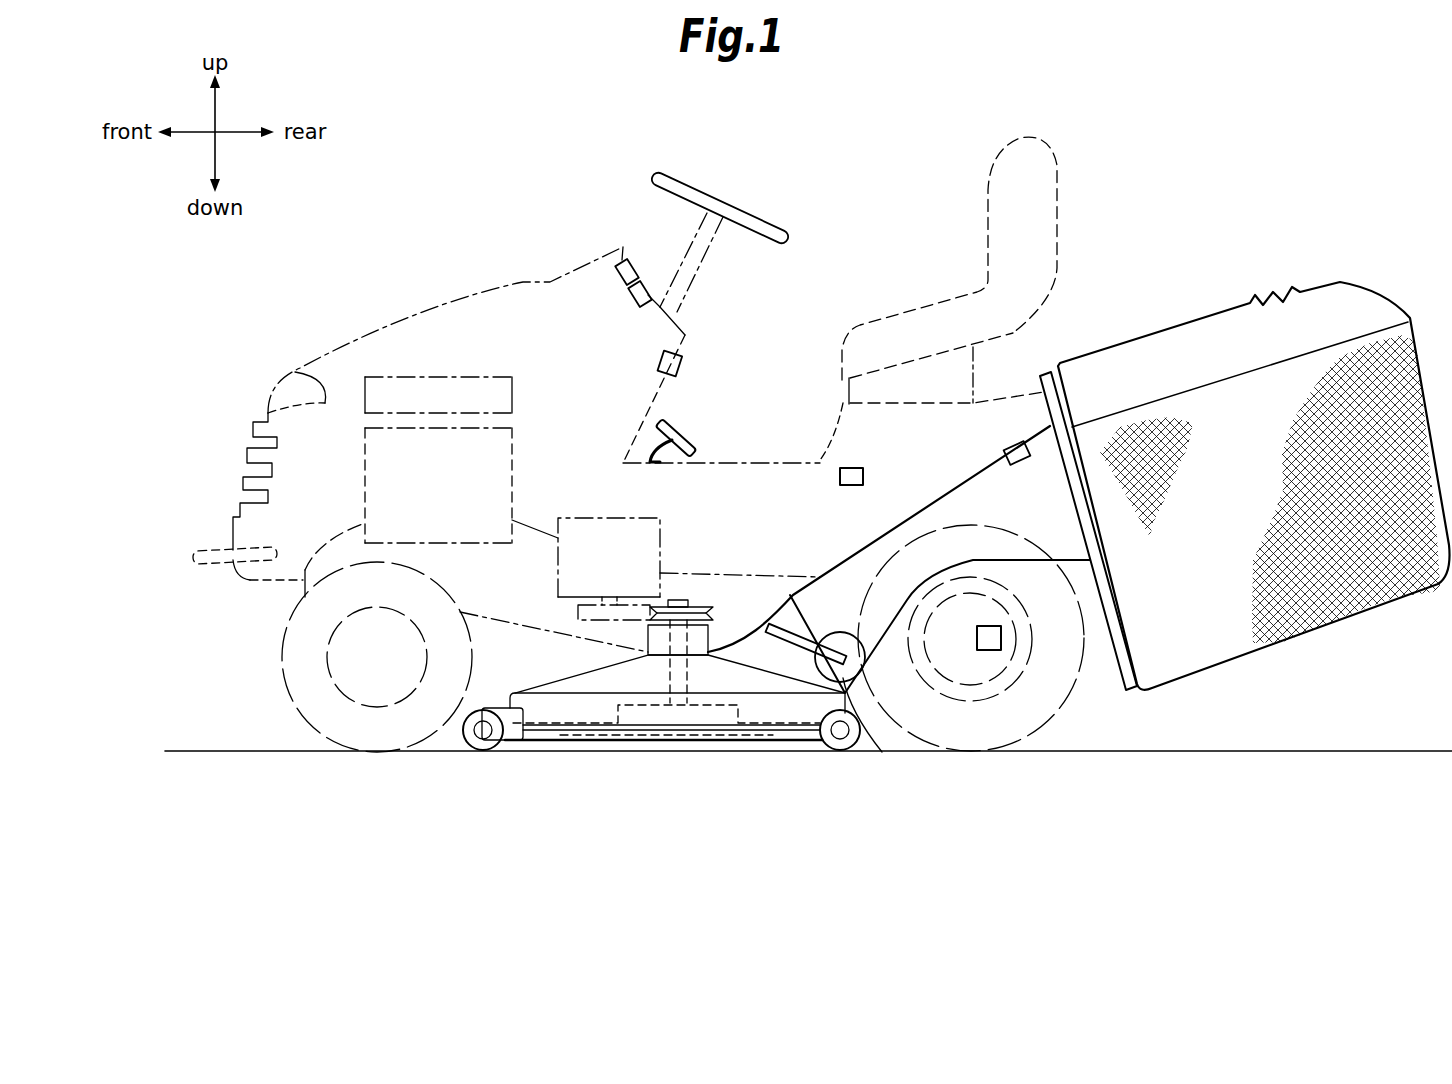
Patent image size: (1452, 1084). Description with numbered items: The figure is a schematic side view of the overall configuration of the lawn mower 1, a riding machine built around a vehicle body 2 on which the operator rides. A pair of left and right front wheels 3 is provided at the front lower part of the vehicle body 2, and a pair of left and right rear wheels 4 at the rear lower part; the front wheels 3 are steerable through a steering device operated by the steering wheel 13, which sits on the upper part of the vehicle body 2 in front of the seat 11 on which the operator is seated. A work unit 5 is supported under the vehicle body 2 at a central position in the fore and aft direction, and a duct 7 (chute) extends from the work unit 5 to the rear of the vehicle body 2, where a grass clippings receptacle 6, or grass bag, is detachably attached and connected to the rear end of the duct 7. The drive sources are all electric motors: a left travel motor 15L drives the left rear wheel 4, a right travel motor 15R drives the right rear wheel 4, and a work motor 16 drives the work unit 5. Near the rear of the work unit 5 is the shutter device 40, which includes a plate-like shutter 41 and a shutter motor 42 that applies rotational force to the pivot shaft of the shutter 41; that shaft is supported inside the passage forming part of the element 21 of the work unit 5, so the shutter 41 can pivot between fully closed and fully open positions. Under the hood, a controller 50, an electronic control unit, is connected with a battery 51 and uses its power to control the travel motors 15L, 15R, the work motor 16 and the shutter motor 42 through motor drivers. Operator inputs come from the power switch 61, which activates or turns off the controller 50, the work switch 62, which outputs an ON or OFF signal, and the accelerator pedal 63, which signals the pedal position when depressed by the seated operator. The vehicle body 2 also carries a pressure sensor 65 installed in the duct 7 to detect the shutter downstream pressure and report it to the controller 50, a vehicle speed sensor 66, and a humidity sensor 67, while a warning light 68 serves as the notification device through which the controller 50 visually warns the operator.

The lawn mower 1 is at (1070, 70).
The vehicle body 2 is at (453, 302).
The front wheels 3 is at (295, 705).
The rear wheels 4 is at (1060, 707).
The work unit 5 is at (726, 762).
The grass clippings receptacle 6 is at (1172, 340).
The duct 7 is at (970, 480).
The seat 11 is at (1057, 197).
The steering wheel 13 is at (723, 203).
The left travel motor 15L is at (961, 713).
The right travel motor 15R is at (945, 677).
The work motor 16 is at (660, 527).
The mower blade 21 is at (580, 713).
The shutter device 40 is at (838, 624).
The shutter 41 is at (783, 630).
The shutter motor 42 is at (882, 752).
The controller 50 is at (453, 377).
The battery 51 is at (513, 473).
The power switch 61 is at (681, 368).
The work switch 62 is at (645, 290).
The accelerator pedal 63 is at (678, 430).
The pressure sensor 65 is at (1017, 447).
The vehicle speed sensor 66 is at (988, 652).
The humidity sensor 67 is at (852, 468).
The warning light 68 is at (623, 250).